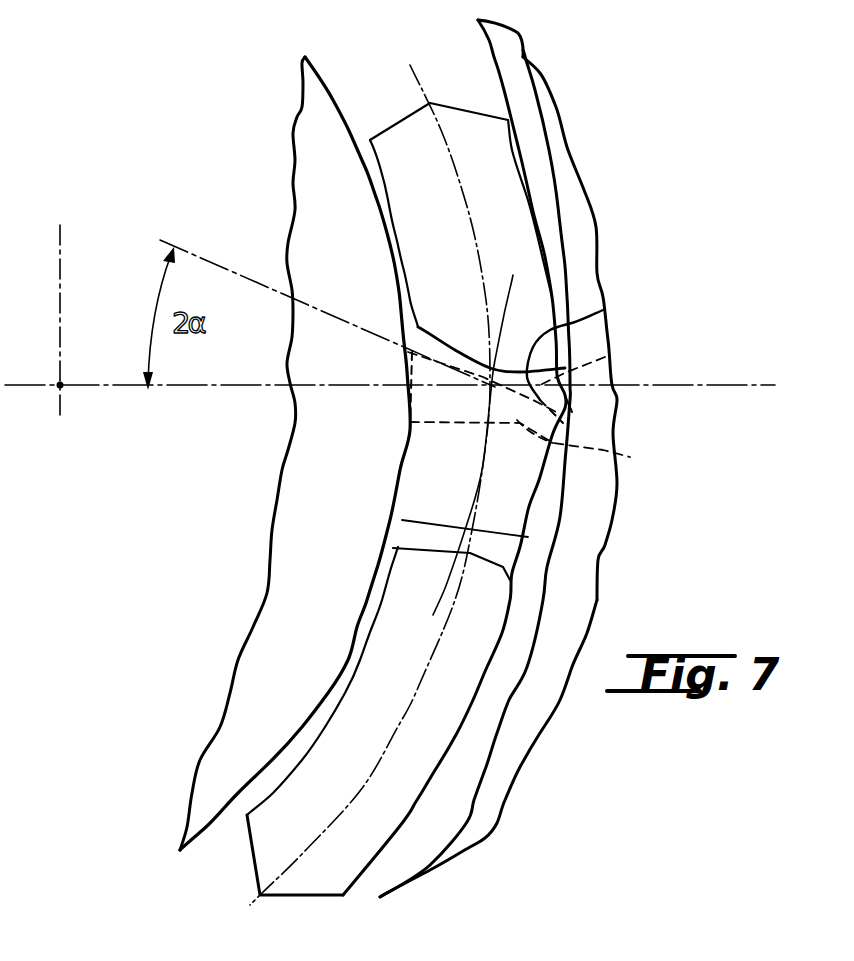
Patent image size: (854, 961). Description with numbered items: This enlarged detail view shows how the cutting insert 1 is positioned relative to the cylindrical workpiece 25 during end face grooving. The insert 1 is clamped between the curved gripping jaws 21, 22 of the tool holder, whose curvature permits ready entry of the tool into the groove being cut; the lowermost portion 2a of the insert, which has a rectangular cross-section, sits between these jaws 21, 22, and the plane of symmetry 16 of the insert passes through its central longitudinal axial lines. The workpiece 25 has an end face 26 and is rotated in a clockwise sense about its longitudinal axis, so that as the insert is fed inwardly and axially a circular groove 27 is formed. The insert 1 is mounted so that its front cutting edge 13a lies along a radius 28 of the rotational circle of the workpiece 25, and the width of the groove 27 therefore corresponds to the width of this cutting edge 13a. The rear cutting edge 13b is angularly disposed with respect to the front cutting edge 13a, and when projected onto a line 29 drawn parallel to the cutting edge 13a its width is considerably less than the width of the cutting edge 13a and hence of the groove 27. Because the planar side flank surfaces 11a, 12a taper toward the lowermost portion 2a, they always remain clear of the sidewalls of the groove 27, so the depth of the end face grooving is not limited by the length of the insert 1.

The cutting insert 1 is at (597, 577).
The lowermost portion 2a is at (540, 516).
The side flank surface 11a is at (570, 403).
The side flank surface 12a is at (400, 397).
The front cutting edge 13a is at (603, 310).
The front cutting edge 13b is at (605, 357).
The plane of symmetry 16 is at (412, 470).
The jaw 21 is at (503, 147).
The jaw 22 is at (443, 723).
The cylindrical workpiece 25 is at (497, 33).
The end face 26 is at (583, 228).
The circular groove 27 is at (478, 70).
The radius 28 is at (220, 395).
The line 29 is at (630, 457).